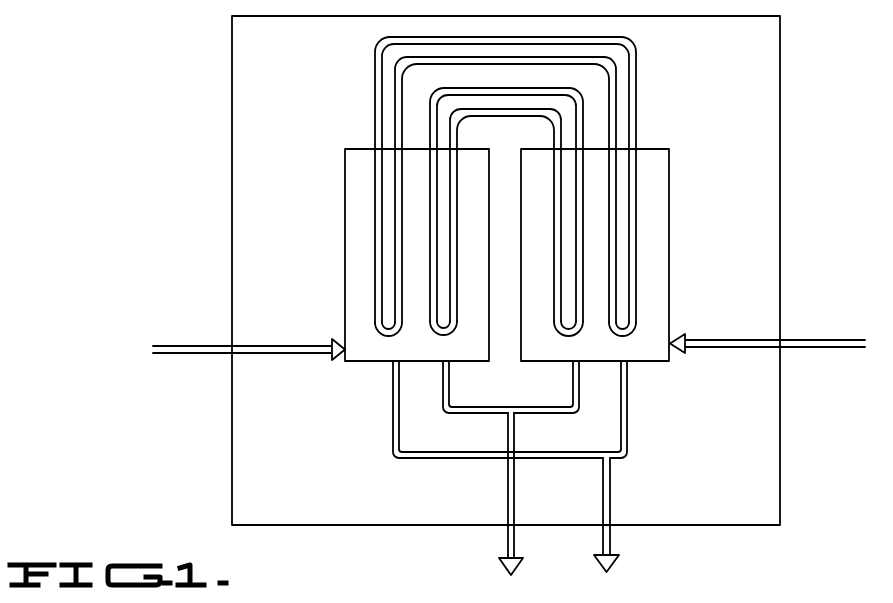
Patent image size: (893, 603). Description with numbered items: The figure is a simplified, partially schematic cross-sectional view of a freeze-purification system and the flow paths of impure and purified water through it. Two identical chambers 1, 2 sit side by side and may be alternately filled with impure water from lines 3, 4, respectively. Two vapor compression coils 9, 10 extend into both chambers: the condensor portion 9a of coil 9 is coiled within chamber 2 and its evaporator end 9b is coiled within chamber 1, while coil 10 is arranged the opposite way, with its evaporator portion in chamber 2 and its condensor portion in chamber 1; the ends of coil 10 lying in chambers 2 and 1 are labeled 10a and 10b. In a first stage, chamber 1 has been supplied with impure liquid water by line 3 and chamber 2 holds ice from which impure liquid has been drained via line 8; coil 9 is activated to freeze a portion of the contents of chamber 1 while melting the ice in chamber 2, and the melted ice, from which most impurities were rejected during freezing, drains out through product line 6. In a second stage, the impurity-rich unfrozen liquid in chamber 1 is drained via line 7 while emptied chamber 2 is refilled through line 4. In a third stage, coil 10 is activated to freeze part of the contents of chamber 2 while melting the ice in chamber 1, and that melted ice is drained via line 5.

The chamber 1 is at (531, 255).
The chamber 2 is at (465, 258).
The line 3 is at (716, 338).
The line 4 is at (275, 345).
The line 5 is at (572, 392).
The product line 6 is at (451, 383).
The line 7 is at (628, 435).
The line 8 is at (393, 428).
The vapor compression coil 9 is at (637, 48).
The condensor portion 9a is at (377, 313).
The evaporator end 9b is at (640, 317).
The vapor compression coil 10 is at (437, 90).
The first end of second heat pipe 10a is at (437, 335).
The second end of second heat pipe 10b is at (580, 334).